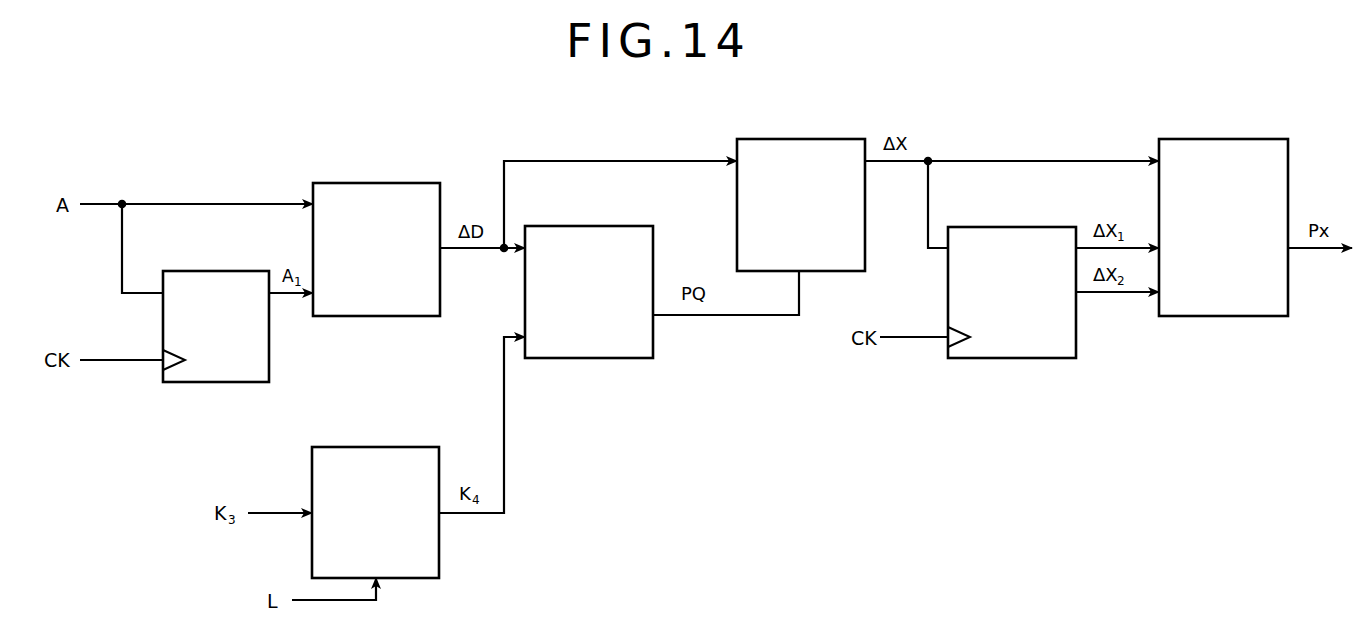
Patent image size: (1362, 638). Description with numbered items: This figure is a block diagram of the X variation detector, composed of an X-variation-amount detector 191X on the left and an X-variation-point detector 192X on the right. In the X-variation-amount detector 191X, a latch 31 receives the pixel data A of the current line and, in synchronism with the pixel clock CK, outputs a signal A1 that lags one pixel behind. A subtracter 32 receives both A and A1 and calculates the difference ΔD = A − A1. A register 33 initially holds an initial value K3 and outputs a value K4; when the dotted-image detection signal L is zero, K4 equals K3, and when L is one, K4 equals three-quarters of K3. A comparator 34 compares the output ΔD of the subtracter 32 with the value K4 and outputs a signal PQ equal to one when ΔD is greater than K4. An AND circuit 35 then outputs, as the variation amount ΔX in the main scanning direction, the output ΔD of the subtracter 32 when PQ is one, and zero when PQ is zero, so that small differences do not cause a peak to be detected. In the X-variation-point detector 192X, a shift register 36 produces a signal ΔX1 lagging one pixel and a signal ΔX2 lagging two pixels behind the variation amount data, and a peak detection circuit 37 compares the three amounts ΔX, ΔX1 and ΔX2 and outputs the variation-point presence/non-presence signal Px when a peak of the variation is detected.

The latch 31 is at (229, 271).
The subtracter 32 is at (403, 183).
The register 33 is at (401, 447).
The comparator 34 is at (613, 226).
The AND circuit 35 is at (826, 139).
The shift register 36 is at (1038, 227).
The peak detection circuit 37 is at (1250, 139).
The X-variation-amount detector 191X is at (610, 448).
The X-variation-point detector 192X is at (988, 403).